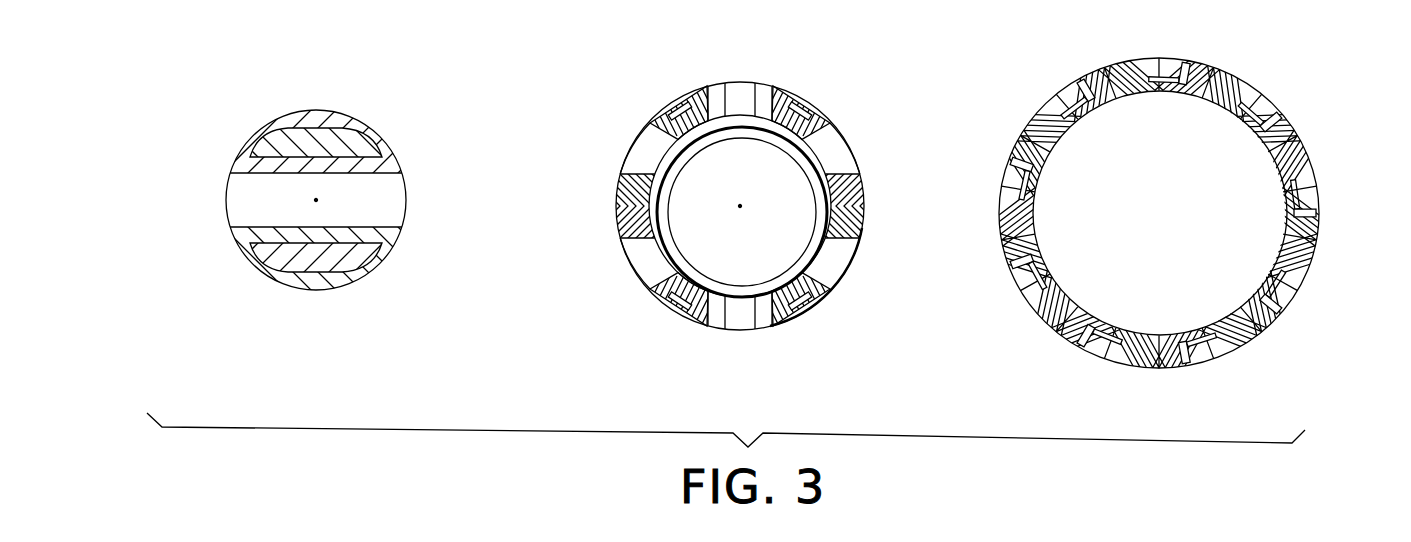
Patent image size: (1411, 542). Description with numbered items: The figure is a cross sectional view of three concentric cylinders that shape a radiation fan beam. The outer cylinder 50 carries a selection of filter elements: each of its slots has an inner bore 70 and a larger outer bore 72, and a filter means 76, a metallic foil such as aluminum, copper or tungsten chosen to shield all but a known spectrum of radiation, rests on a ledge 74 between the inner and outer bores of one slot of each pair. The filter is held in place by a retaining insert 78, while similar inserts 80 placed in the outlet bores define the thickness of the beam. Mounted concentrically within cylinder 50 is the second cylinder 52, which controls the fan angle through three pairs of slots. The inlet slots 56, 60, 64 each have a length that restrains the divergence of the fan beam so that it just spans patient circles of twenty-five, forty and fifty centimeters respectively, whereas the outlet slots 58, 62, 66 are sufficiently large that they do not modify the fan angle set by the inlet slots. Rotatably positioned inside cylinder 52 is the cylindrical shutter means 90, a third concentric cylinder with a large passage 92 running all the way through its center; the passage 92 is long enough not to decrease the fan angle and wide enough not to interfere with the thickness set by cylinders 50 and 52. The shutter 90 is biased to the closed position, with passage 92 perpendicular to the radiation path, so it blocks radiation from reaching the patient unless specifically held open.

The cylinder 50 is at (1210, 78).
The second cylinder 52 is at (862, 233).
The inlet slot 56 is at (638, 152).
The outlet slot 58 is at (845, 263).
The inlet slot 60 is at (740, 92).
The outlet slot 62 is at (717, 327).
The inlet slot 64 is at (838, 148).
The outlet slot 66 is at (638, 250).
The inner bore 70 is at (1163, 72).
The outer bore 72 is at (1190, 73).
The ledge 74 is at (1323, 202).
The filter means 76 is at (1237, 83).
The retaining insert 78 is at (1290, 297).
The insert 80 is at (1145, 367).
The cylindrical shutter means 90 is at (373, 140).
The passage 92 is at (242, 195).